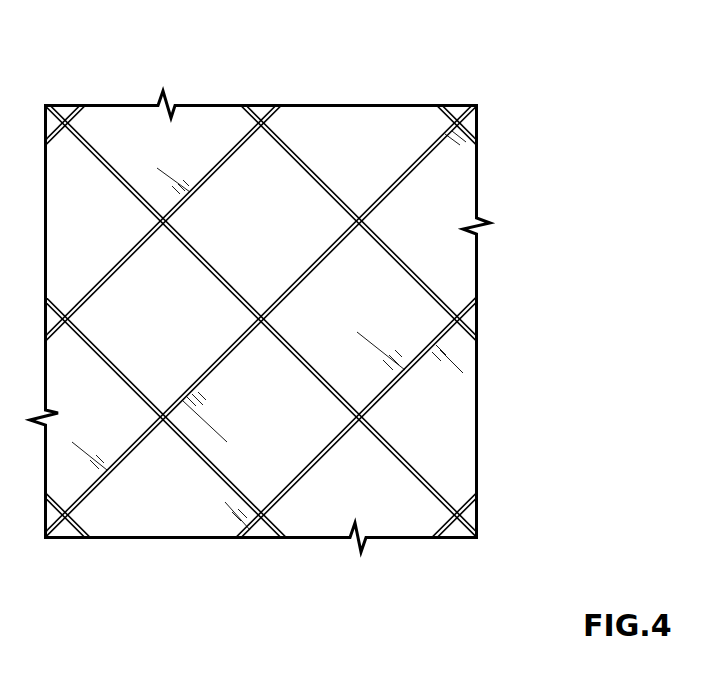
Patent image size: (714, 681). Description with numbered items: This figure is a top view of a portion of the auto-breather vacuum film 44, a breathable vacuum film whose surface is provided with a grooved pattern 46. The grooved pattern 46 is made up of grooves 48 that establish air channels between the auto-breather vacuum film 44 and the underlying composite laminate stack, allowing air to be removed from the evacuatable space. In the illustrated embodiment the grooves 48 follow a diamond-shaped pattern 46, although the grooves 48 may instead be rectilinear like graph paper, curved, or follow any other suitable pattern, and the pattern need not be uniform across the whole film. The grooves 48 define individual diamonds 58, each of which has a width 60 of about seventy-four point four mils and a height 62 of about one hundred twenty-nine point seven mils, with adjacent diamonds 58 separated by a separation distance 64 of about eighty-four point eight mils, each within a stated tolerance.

The auto-breather vacuum film 44 is at (474, 74).
The grooved pattern 46 is at (415, 367).
The grooves 48 is at (445, 337).
The diamonds 58 is at (455, 468).
The width 60 is at (250, 319).
The height 62 is at (457, 130).
The separation distance 64 is at (298, 188).